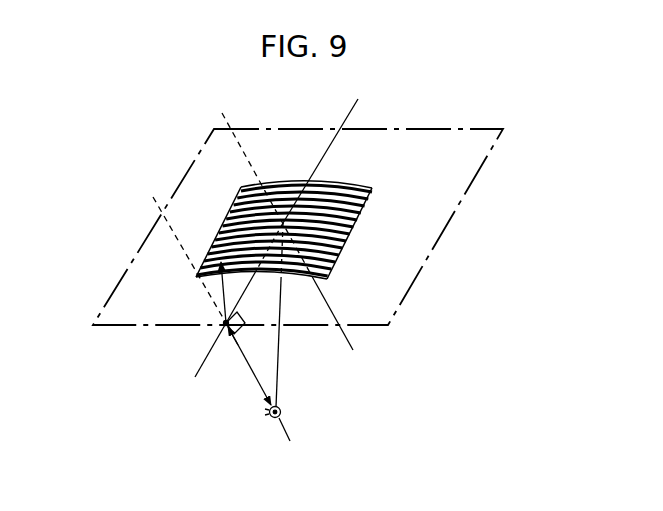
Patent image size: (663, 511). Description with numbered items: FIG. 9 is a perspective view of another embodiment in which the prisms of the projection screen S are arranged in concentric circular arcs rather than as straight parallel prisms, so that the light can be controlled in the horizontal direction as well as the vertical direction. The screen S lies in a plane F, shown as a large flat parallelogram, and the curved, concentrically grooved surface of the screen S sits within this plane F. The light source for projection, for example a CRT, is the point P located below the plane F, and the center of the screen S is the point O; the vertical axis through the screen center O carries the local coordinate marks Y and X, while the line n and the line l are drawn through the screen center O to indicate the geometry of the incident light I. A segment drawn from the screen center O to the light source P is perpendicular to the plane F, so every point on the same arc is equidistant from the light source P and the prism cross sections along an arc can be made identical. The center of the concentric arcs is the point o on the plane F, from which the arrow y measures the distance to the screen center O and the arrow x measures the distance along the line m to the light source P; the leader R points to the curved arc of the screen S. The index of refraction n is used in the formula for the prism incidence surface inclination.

The plane F is at (448, 128).
The screen S is at (365, 184).
The incident light I is at (369, 199).
The index of refraction n is at (280, 225).
The line l is at (292, 245).
The center of the screen O is at (274, 309).
The Y axis at grating center Y is at (285, 203).
The X axis at grating center X is at (291, 225).
The distance between light source and arc center x is at (212, 301).
The distance between screen center and arc center y is at (231, 292).
The center of the arcs o is at (229, 337).
The radius of curvature R is at (218, 288).
The light source P is at (282, 414).
The line m is at (289, 440).